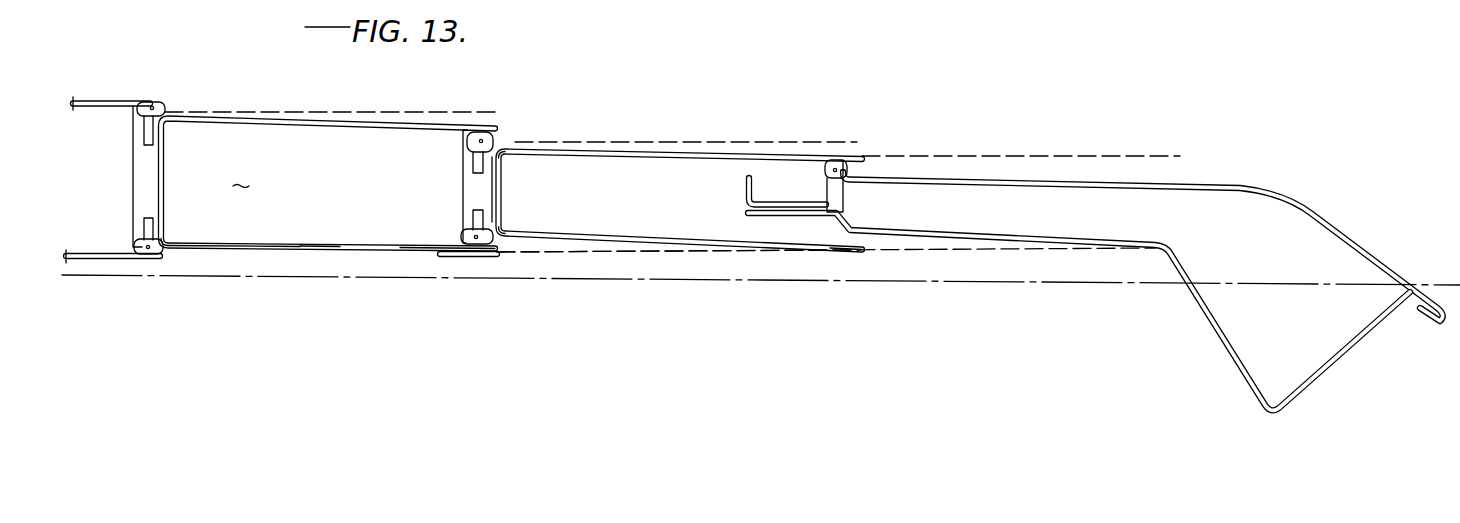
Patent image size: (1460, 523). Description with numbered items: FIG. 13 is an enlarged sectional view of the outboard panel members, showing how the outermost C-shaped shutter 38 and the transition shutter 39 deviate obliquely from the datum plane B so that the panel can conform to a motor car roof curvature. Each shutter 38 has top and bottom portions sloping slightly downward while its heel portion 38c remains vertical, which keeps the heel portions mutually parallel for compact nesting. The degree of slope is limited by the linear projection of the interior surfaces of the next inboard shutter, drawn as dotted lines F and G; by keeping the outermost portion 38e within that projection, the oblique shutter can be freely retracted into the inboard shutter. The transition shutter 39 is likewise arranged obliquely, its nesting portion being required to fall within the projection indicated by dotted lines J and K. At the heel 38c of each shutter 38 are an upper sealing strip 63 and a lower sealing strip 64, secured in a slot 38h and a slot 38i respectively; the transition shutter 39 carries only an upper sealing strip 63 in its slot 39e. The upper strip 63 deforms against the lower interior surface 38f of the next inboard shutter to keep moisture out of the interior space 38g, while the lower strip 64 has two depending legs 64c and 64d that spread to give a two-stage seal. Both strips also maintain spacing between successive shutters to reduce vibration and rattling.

The shutter 38 is at (333, 223).
The heel portion 38c is at (133, 170).
The outermost portion 38e is at (867, 253).
The lower interior surface 38f is at (316, 227).
The interior space 38g is at (435, 181).
The slot 38h is at (493, 172).
The slot 38i is at (164, 240).
The transition shutter 39 is at (1008, 243).
The slot 39e is at (838, 201).
The upper sealing strip 63 is at (140, 110).
The lower sealing strip 64 is at (146, 228).
The depending leg 64c is at (160, 254).
The depending leg 64d is at (146, 253).
The dotted line F is at (673, 253).
The dotted line G is at (785, 141).
The dotted line J is at (1057, 248).
The dotted line K is at (1020, 155).
The datum plane B is at (1260, 283).